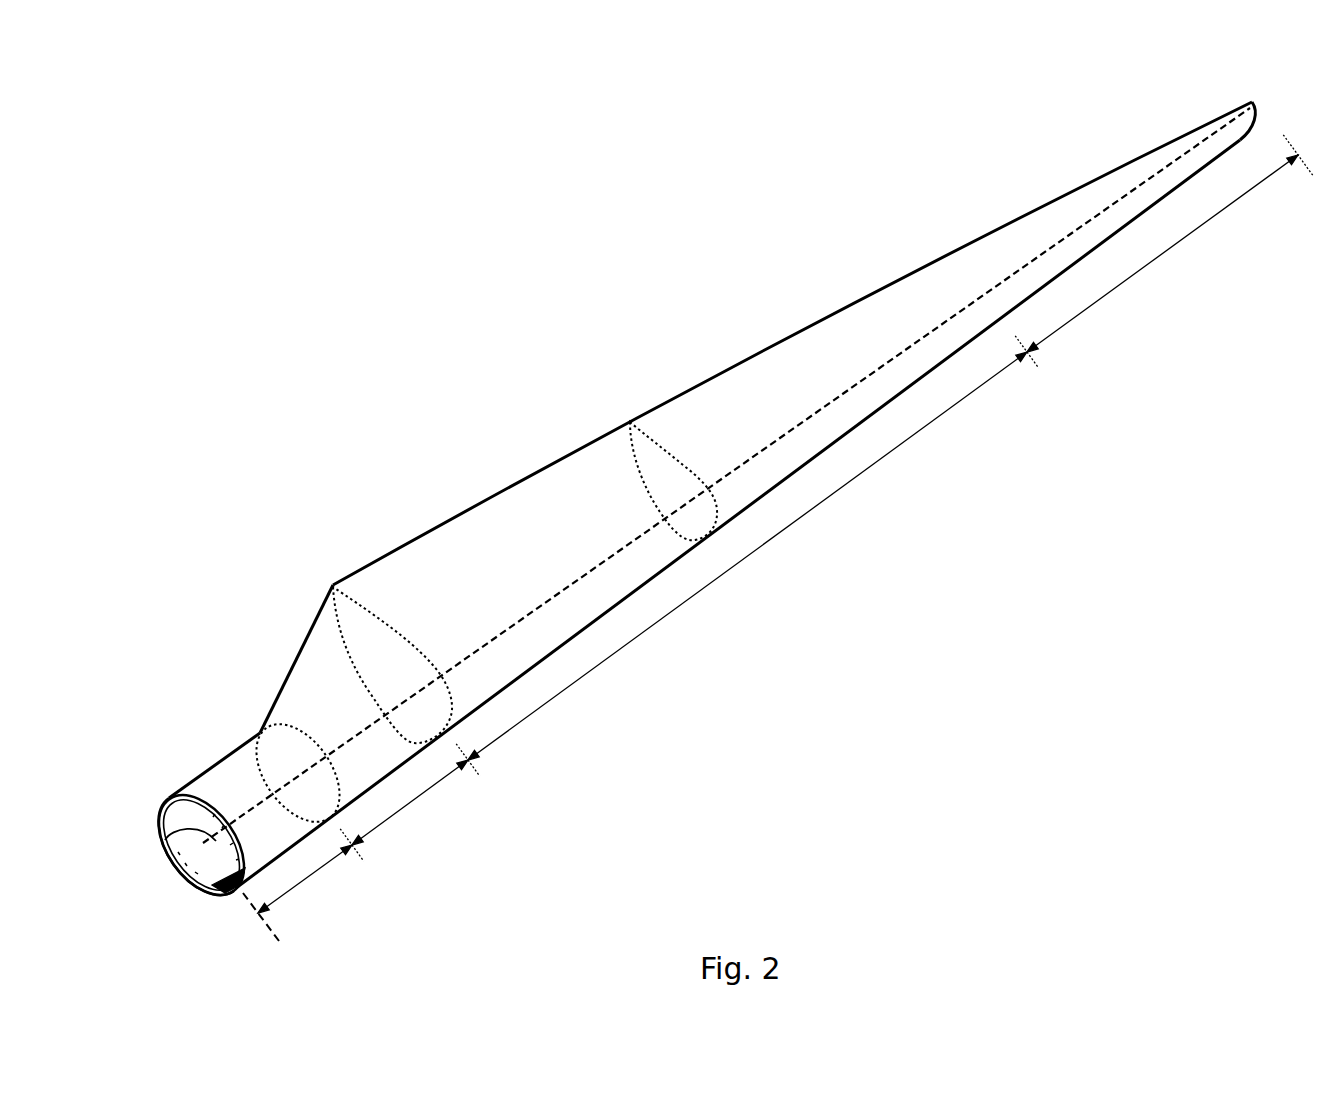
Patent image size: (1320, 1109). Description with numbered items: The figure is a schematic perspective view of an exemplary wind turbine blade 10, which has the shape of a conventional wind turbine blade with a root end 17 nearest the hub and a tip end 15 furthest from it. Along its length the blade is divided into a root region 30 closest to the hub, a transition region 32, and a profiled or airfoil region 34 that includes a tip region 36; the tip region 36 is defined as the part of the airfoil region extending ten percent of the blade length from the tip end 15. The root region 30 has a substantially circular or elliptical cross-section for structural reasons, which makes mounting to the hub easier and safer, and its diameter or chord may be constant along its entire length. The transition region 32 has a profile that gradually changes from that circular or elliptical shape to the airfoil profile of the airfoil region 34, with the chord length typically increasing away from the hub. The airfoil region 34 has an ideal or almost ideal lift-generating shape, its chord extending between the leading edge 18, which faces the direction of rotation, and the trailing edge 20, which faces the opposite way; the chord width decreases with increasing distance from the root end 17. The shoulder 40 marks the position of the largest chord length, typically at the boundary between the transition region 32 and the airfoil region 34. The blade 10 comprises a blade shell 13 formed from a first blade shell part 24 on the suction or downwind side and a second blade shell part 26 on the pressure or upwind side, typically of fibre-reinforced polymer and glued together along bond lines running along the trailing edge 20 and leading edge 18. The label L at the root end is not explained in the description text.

The wind turbine blade 10 is at (517, 352).
The blade shell 13 is at (321, 691).
The tip end 15 is at (1252, 102).
The root end 17 is at (172, 804).
The leading edge 18 is at (923, 377).
The trailing edge 20 is at (800, 331).
The first blade shell part 24 is at (197, 798).
The second blade shell part 26 is at (190, 877).
The longitudinal axis L is at (165, 840).
The root region 30 is at (308, 880).
The transition region 32 is at (415, 802).
The airfoil region 34 is at (803, 517).
The tip region 36 is at (1140, 272).
The shoulder 40 is at (333, 585).